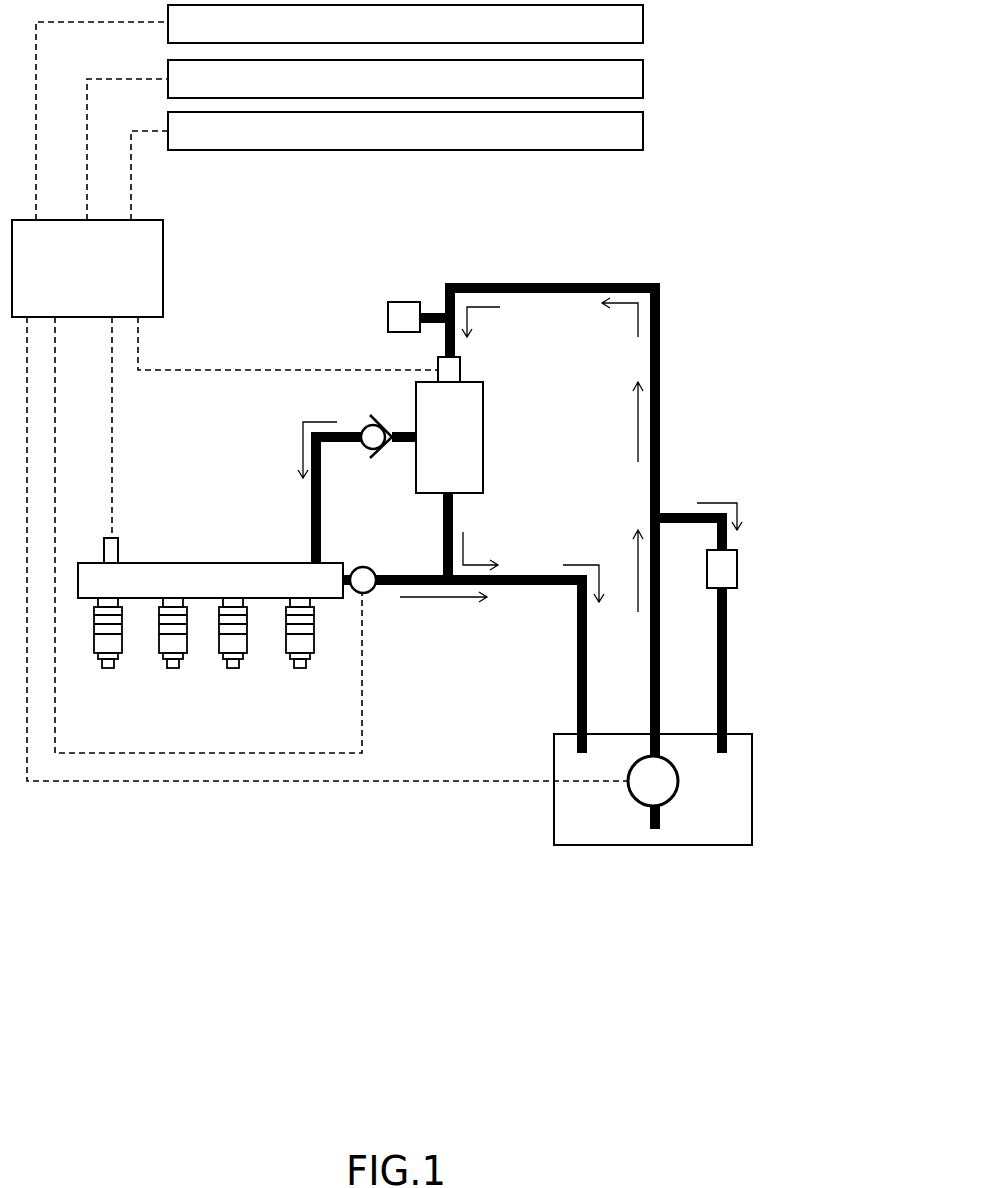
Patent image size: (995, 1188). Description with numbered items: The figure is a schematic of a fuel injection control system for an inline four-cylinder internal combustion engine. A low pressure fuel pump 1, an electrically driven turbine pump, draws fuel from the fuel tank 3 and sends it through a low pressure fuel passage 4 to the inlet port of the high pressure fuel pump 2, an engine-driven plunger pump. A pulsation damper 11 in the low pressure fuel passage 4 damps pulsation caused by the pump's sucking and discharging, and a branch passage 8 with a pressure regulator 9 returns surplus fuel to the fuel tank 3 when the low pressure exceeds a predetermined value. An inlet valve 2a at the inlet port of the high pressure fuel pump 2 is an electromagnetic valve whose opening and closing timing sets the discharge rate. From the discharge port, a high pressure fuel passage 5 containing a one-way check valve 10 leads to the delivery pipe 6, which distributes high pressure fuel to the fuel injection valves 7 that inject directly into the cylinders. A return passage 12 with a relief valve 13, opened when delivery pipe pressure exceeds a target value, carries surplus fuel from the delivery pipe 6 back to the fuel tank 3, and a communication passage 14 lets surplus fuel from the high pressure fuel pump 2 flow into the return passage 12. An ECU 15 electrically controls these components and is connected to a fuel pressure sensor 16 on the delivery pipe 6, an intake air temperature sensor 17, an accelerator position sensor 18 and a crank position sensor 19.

The low pressure fuel pump 1 is at (635, 798).
The high pressure fuel pump 2 is at (483, 448).
The inlet valve 2a is at (460, 365).
The fuel tank 3 is at (693, 845).
The low pressure fuel passage 4 is at (660, 318).
The high pressure fuel passage 5 is at (321, 535).
The delivery pipe 6 is at (212, 563).
The fuel injection valves 7 is at (300, 668).
The branch passage 8 is at (678, 512).
The pressure regulator 9 is at (737, 568).
The check valve 10 is at (365, 422).
The pulsation damper 11 is at (400, 300).
The return passage 12 is at (523, 586).
The relief valve 13 is at (372, 592).
The communication passage 14 is at (453, 510).
The ECU 15 is at (163, 268).
The fuel pressure sensor 16 is at (104, 538).
The intake air temperature sensor 17 is at (643, 23).
The accelerator position sensor 18 is at (643, 78).
The crank position sensor 19 is at (643, 130).